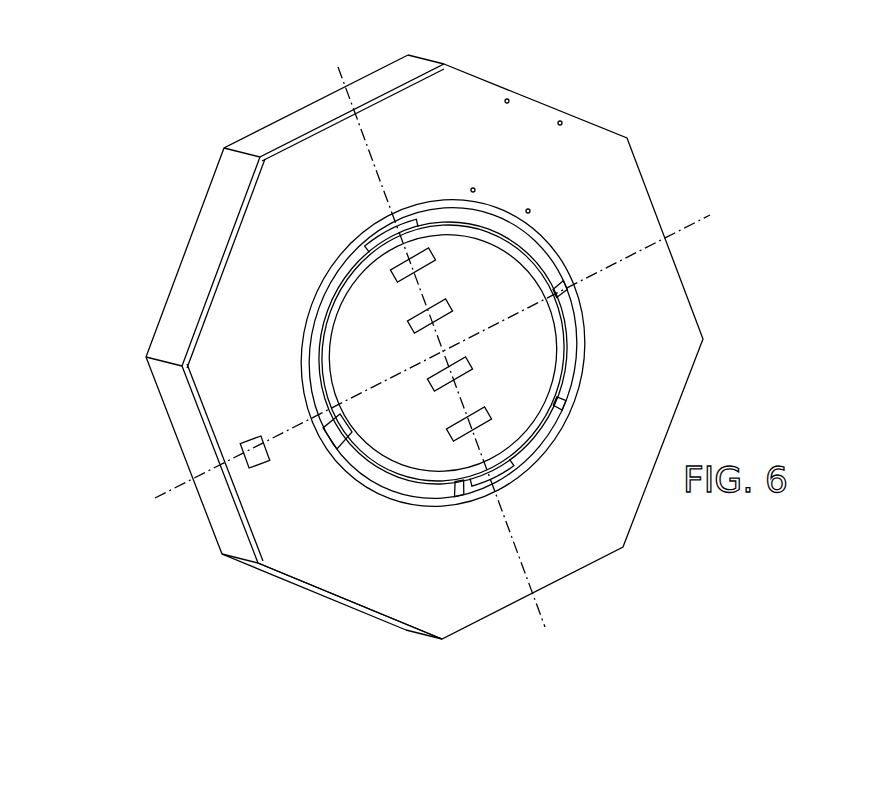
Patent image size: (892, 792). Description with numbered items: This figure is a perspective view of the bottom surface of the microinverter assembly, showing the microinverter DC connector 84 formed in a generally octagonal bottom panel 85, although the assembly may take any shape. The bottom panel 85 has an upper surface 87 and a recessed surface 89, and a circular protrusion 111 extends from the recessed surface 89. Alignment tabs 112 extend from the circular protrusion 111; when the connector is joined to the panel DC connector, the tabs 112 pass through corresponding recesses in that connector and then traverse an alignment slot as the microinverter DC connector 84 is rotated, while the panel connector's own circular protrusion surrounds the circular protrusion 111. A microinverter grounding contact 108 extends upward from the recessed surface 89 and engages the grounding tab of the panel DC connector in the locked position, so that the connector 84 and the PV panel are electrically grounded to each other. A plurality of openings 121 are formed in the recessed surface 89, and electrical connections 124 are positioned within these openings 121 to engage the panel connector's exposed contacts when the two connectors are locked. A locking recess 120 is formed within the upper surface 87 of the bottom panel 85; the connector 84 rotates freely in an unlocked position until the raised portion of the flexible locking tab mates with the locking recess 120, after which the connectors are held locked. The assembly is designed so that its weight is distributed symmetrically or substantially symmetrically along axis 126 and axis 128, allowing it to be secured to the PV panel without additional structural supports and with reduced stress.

The microinverter DC connector 84 is at (165, 122).
The bottom panel 85 is at (263, 265).
The upper surface 87 is at (335, 565).
The recessed surface 89 is at (525, 248).
The microinverter grounding contact 108 is at (331, 432).
The circular protrusion 111 is at (554, 362).
The alignment tabs 112 is at (412, 214).
The locking recess 120 is at (259, 466).
The openings 121 is at (402, 330).
The electrical connections 124 is at (436, 262).
The axis 126 is at (544, 618).
The axis 128 is at (690, 228).